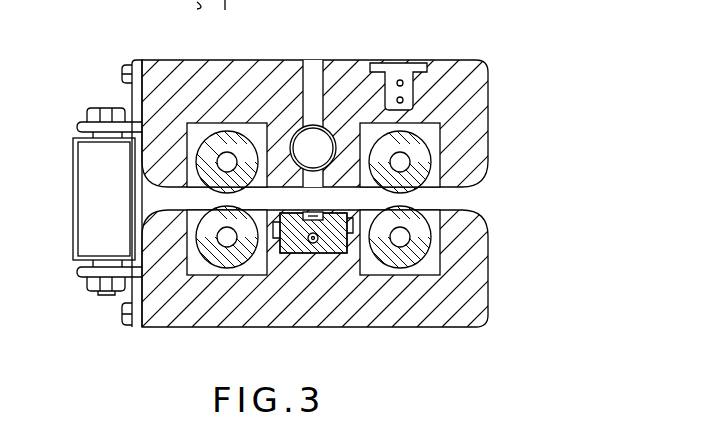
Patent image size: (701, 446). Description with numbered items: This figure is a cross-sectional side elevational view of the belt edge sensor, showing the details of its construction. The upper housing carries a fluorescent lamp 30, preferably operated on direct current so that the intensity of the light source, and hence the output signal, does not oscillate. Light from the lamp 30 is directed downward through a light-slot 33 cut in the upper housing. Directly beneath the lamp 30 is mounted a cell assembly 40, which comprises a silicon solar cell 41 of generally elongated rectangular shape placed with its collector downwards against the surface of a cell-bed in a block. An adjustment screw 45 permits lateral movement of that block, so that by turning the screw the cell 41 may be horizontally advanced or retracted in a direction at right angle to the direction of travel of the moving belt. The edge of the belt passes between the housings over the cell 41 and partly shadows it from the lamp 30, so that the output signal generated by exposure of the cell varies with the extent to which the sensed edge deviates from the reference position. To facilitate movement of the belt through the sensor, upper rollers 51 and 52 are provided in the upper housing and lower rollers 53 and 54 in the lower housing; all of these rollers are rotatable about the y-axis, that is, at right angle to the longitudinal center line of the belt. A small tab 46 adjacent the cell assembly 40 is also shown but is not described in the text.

The fluorescent lamp 30 is at (312, 137).
The light-slot 33 is at (308, 187).
The cell assembly 40 is at (325, 258).
The silicon solar cell 41 is at (310, 212).
The adjustment screw 45 is at (308, 246).
The stop tab 46 is at (330, 211).
The upper roller 51 is at (226, 130).
The upper roller 52 is at (394, 138).
The lower roller 53 is at (220, 262).
The lower roller 54 is at (400, 267).